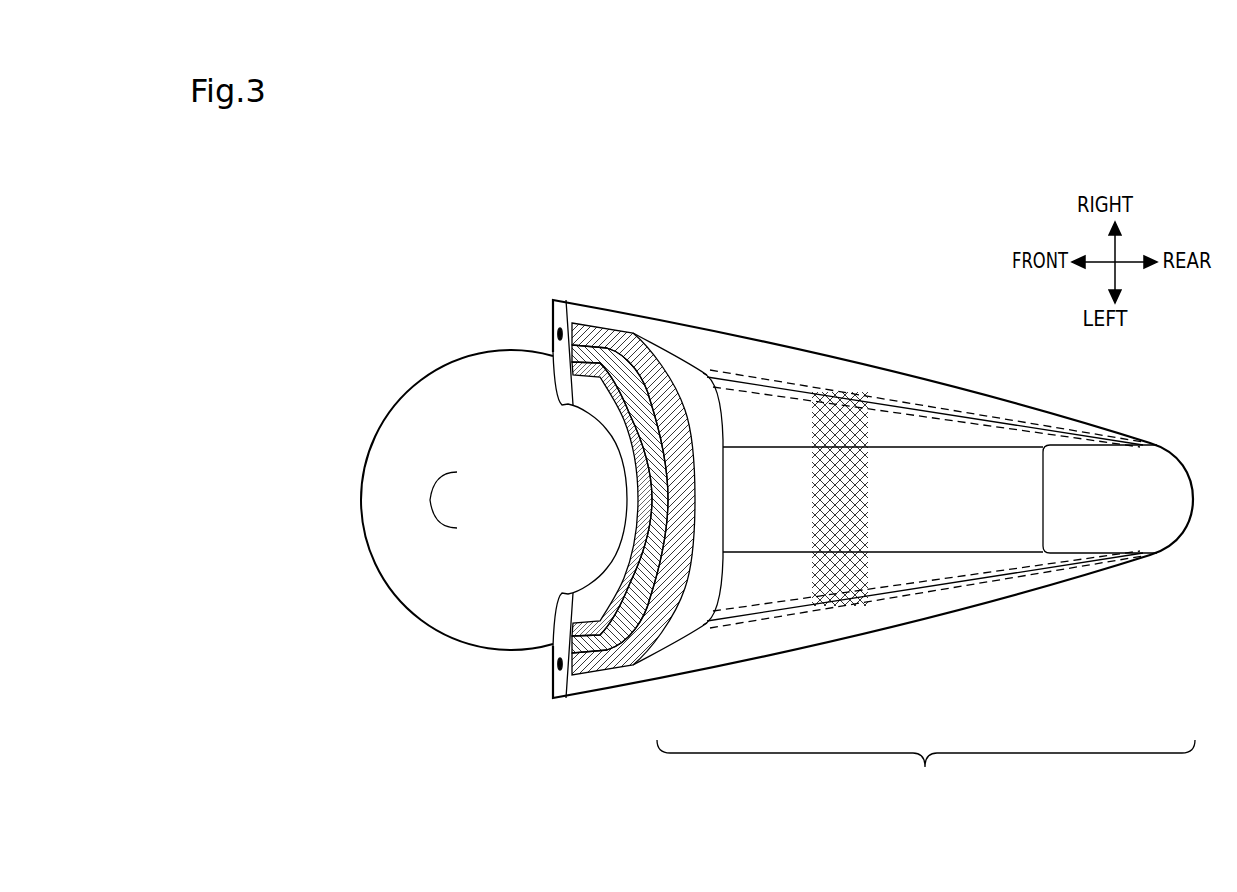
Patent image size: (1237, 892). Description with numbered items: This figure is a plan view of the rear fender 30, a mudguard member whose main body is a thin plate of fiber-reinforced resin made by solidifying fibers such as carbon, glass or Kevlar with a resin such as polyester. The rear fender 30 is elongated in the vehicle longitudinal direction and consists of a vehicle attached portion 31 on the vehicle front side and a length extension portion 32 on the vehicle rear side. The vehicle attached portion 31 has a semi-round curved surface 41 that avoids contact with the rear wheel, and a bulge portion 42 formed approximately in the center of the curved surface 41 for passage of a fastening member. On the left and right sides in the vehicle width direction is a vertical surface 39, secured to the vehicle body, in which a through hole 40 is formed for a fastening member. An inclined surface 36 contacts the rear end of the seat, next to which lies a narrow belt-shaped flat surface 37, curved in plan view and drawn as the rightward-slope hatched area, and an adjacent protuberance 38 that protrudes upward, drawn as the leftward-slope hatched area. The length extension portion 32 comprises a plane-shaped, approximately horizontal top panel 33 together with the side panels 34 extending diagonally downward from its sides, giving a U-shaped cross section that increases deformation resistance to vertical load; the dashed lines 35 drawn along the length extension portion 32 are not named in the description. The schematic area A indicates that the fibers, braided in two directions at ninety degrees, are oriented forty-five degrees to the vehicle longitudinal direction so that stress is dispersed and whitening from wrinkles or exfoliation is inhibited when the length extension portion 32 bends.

The rear fender 30 is at (703, 214).
The vehicle attached portion 31 is at (648, 740).
The length extension portion 32 is at (926, 771).
The top panel 33 is at (788, 520).
The skin 34 is at (804, 355).
The seam line 35 is at (917, 397).
The inclined surface 36 is at (702, 437).
The flat surface 37 is at (667, 437).
The protuberance 38 is at (651, 485).
The vertical surface 39 is at (556, 322).
The through hole 40 is at (556, 335).
The curved surface 41 is at (405, 568).
The bulge portion 42 is at (430, 501).
The schematic area A is at (847, 417).